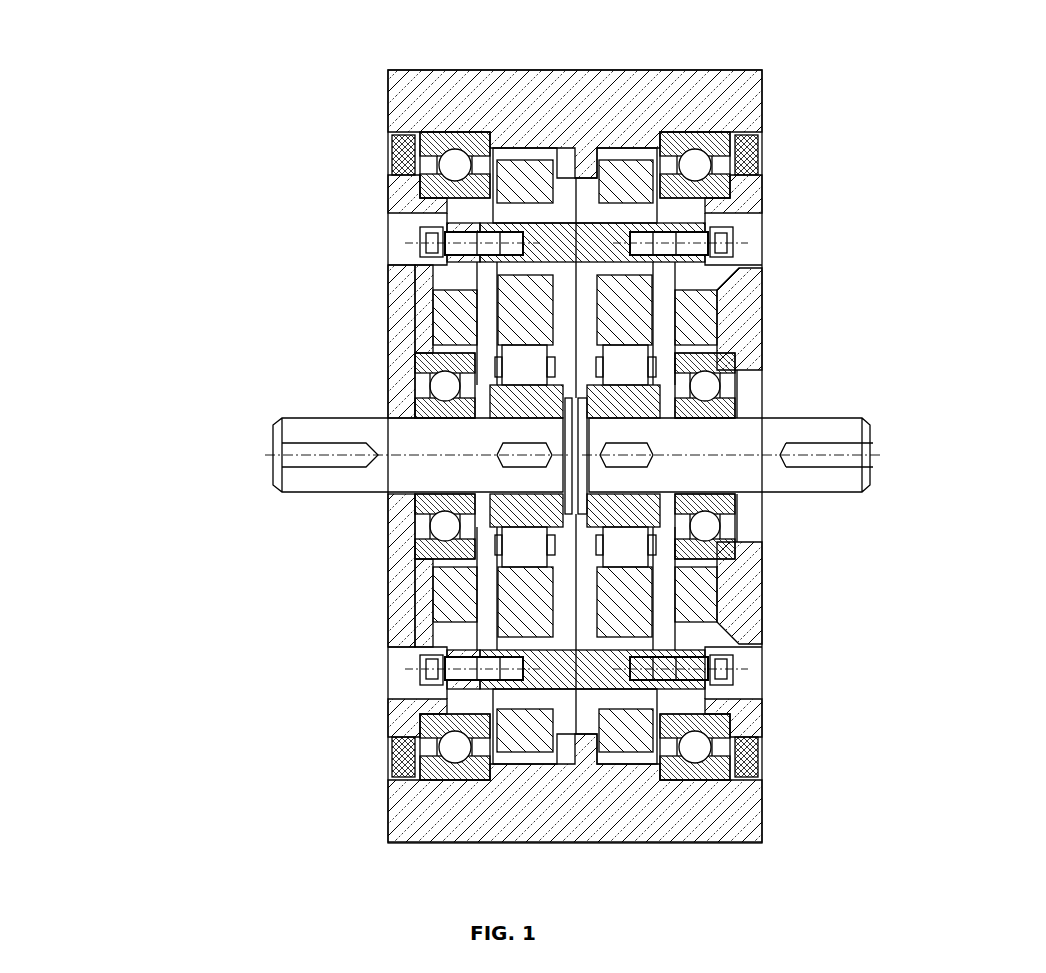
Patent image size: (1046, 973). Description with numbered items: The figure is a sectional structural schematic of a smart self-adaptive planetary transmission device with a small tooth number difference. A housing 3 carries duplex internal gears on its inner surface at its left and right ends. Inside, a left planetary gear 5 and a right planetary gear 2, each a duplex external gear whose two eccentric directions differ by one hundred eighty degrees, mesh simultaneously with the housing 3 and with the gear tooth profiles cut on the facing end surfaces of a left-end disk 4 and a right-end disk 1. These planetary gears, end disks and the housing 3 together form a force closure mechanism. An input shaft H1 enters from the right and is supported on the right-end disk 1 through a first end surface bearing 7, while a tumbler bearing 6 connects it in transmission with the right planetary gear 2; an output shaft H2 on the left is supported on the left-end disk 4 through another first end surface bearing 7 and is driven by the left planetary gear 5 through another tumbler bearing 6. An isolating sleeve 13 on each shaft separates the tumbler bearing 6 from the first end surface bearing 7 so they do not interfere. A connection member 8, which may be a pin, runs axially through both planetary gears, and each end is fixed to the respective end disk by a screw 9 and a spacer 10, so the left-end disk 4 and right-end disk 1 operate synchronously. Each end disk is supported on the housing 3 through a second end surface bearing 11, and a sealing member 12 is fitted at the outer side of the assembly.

The right-end disk 1 is at (745, 348).
The right planetary gear 2 is at (628, 303).
The housing 3 is at (718, 107).
The left-end disk 4 is at (403, 192).
The left planetary gear 5 is at (423, 227).
The tumbler bearing 6 is at (520, 400).
The first end surface bearing 7 is at (430, 410).
The connection member 8 is at (543, 660).
The screw 9 is at (433, 663).
The spacer 10 is at (120, 645).
The second end surface bearing 11 is at (707, 765).
The sealing member 12 is at (758, 762).
The isolating sleeve 13 is at (667, 500).
The input shaft H1 is at (835, 432).
The output shaft H2 is at (318, 484).